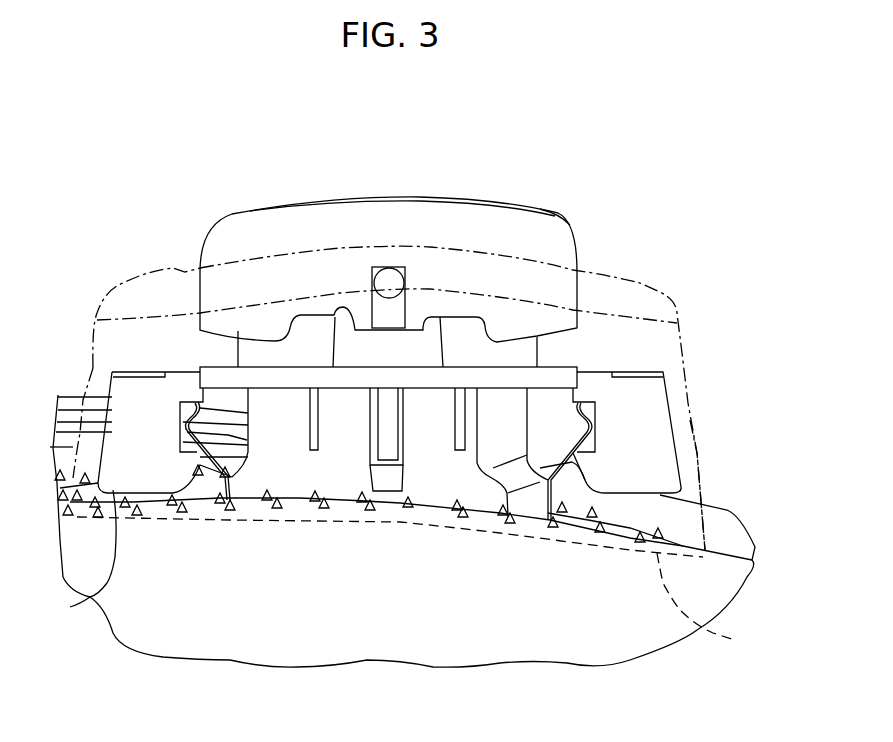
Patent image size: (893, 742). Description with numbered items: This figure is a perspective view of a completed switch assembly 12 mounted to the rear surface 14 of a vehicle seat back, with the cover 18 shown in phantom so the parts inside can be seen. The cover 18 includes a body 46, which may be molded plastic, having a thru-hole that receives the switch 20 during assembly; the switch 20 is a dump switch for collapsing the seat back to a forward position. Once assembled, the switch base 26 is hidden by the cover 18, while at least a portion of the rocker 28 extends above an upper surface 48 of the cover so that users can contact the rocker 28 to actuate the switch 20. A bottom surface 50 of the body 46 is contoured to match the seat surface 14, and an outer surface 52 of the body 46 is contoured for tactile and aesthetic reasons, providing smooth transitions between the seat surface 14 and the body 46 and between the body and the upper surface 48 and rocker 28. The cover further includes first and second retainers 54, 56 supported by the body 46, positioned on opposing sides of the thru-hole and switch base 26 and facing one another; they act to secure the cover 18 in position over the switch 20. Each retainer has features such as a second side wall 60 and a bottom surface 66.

The switch assembly 12 is at (232, 213).
The rear surface 14 is at (301, 602).
The cover 18 is at (668, 298).
The switch 20 is at (506, 205).
The switch base 26 is at (329, 442).
The rocker 28 is at (406, 198).
The body 46 is at (697, 450).
The upper surface 48 is at (147, 277).
The bottom surface 50 is at (735, 640).
The outer surface 52 is at (143, 353).
The first retainer 54 is at (660, 420).
The second retainer 56 is at (122, 395).
The second side wall 60 is at (170, 487).
The bottom surface 66 is at (75, 611).